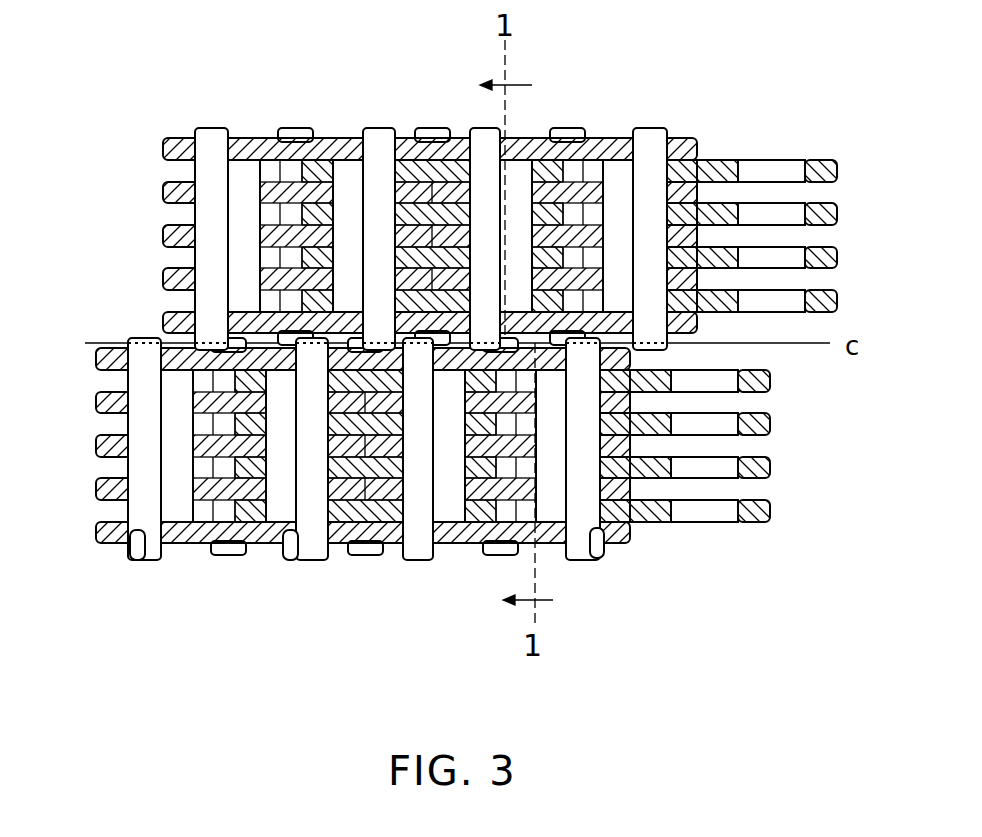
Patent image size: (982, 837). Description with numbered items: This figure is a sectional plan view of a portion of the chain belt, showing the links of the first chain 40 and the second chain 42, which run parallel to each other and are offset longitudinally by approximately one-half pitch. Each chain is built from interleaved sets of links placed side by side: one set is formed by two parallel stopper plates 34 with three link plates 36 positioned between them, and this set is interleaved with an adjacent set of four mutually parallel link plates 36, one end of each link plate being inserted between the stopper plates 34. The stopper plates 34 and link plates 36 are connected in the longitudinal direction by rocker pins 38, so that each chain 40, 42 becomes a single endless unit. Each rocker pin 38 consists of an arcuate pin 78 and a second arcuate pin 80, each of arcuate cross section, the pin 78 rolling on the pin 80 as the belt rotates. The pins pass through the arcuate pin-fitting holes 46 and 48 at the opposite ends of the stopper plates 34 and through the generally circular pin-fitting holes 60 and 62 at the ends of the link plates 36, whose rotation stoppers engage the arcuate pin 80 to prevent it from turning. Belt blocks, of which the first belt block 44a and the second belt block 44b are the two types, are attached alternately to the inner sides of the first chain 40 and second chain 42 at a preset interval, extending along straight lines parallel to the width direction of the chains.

The stopper plate 34 is at (255, 145).
The link plate 36 is at (165, 190).
The rocker pin 38 is at (422, 373).
The first chain 40 is at (667, 560).
The second chain 42 is at (778, 138).
The first belt block 44a is at (301, 128).
The second belt block 44b is at (432, 130).
The pin-fitting hole 46 is at (137, 560).
The pin-fitting hole 48 is at (290, 560).
The pin-fitting hole 60 is at (600, 558).
The pin-fitting hole 62 is at (790, 300).
The arcuate pin 78 is at (613, 498).
The second arcuate pin 80 is at (675, 219).